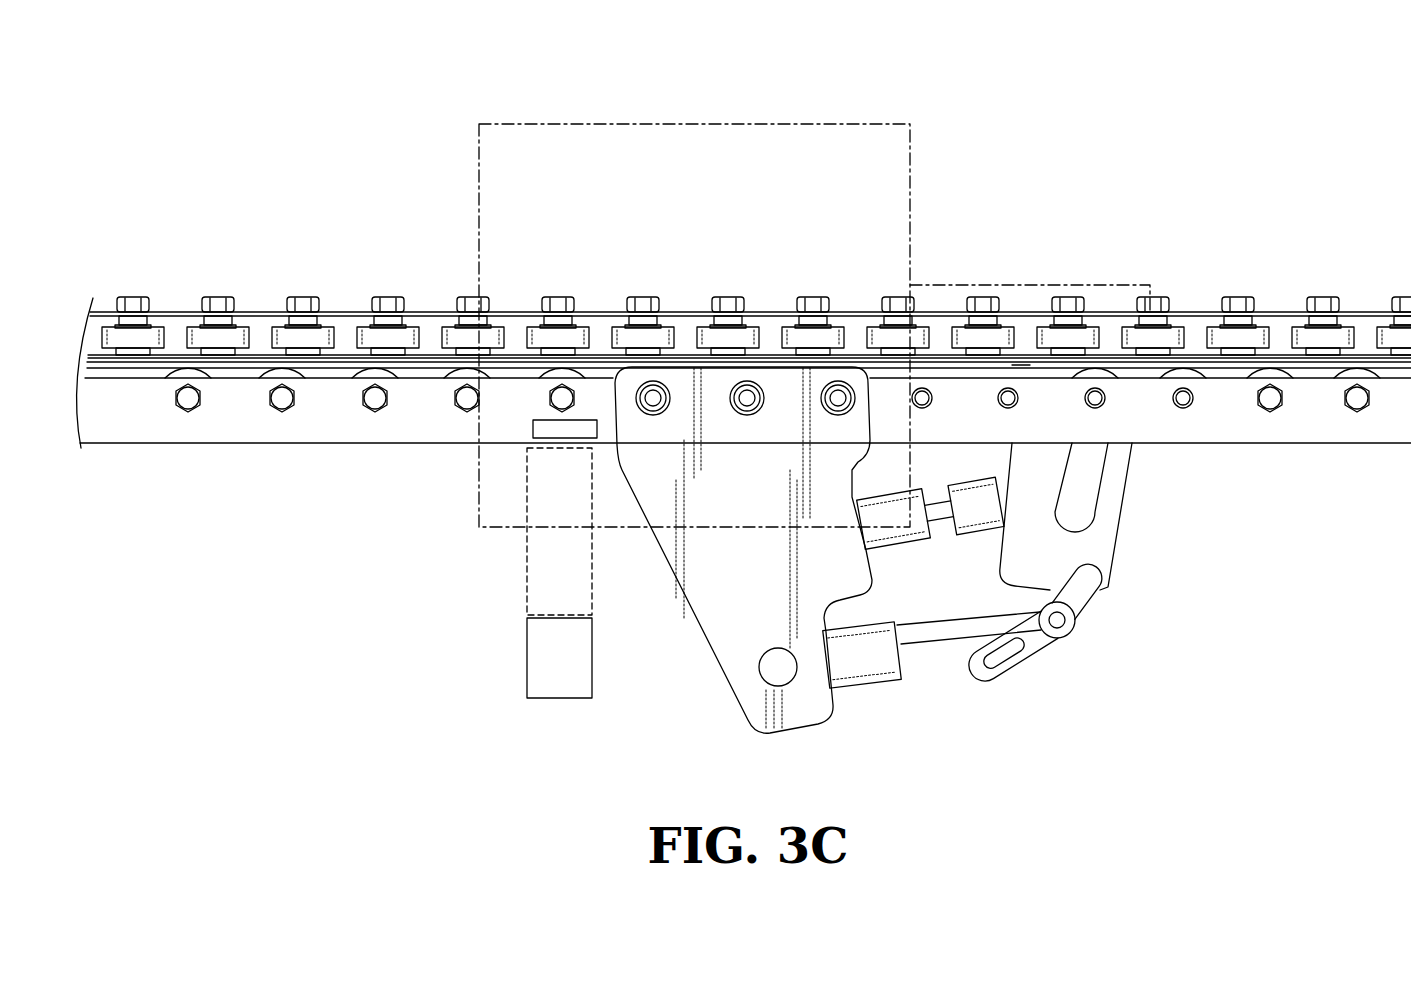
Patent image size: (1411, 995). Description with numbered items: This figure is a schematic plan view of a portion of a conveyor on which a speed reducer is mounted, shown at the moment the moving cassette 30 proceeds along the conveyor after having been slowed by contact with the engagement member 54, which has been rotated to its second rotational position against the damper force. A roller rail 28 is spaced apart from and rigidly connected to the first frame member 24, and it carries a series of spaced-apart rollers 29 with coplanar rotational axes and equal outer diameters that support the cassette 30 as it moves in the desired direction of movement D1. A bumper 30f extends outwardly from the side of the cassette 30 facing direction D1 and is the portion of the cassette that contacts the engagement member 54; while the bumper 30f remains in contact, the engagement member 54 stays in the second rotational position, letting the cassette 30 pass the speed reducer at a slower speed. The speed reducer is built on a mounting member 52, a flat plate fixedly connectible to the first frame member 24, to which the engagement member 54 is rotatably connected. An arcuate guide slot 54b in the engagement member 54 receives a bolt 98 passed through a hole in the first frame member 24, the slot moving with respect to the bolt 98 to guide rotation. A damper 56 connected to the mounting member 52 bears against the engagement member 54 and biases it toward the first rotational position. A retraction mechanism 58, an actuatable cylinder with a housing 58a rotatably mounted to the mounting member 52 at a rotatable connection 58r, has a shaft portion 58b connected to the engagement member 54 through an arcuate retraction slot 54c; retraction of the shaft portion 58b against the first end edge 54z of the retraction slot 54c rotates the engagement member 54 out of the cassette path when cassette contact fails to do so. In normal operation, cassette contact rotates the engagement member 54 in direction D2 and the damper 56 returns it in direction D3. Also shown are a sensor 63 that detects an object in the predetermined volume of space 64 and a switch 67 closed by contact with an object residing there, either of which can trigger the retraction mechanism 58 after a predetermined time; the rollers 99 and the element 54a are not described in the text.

The first frame member 24 is at (232, 415).
The roller rail 28 is at (1272, 308).
The rollers 29 is at (385, 337).
The cassette 30 is at (768, 117).
The bumper 30f is at (1105, 280).
The mounting member 52 is at (735, 562).
The engagement member 54 is at (1137, 455).
The pawl tooth 54a is at (1018, 362).
The guide slot 54b is at (1112, 462).
The retraction slot 54c is at (1097, 592).
The first end edge 54z is at (985, 682).
The damper 56 is at (898, 552).
The retraction mechanism 58 is at (873, 684).
The housing 58a is at (883, 655).
The shaft portion 58b is at (1020, 628).
The rotatable connection 58r is at (775, 667).
The sensor 63 is at (527, 658).
The predetermined volume of space 64 is at (527, 565).
The switch 67 is at (545, 420).
The bolt 98 is at (1097, 398).
The bracket rollers 99 is at (655, 398).
The desired direction of movement D1 is at (857, 242).
The direction of engagement member rotation D2 is at (1184, 697).
The direction of engagement member rotation D3 is at (1342, 585).